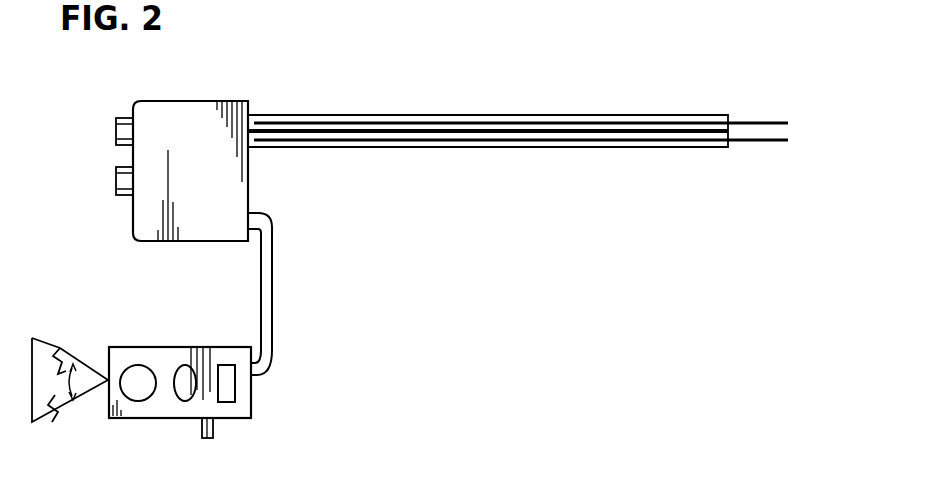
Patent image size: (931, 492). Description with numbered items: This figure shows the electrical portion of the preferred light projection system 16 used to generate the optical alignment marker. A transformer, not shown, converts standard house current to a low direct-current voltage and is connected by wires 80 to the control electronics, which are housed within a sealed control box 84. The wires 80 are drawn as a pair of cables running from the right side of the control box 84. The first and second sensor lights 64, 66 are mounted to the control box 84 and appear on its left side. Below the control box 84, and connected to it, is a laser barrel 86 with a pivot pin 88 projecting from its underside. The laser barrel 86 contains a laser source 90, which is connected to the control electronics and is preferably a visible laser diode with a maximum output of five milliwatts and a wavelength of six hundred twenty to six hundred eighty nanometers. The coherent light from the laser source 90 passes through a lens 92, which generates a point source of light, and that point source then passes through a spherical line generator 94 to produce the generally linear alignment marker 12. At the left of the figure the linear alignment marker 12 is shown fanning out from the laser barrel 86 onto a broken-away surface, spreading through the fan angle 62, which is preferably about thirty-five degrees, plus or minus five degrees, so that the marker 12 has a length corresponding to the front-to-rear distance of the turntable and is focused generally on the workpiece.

The optical sensing apparatus 16 is at (493, 17).
The control box 84 is at (193, 101).
The first sensor light 64 is at (116, 130).
The second sensor light 66 is at (116, 180).
The wires 80 is at (545, 115).
The laser barrel 86 is at (140, 418).
The spherical line generator 94 is at (137, 365).
The lens 92 is at (182, 365).
The laser source 90 is at (227, 365).
The pivot pin 88 is at (213, 438).
The linear alignment marker 12 is at (32, 422).
The fan angle 62 is at (66, 360).